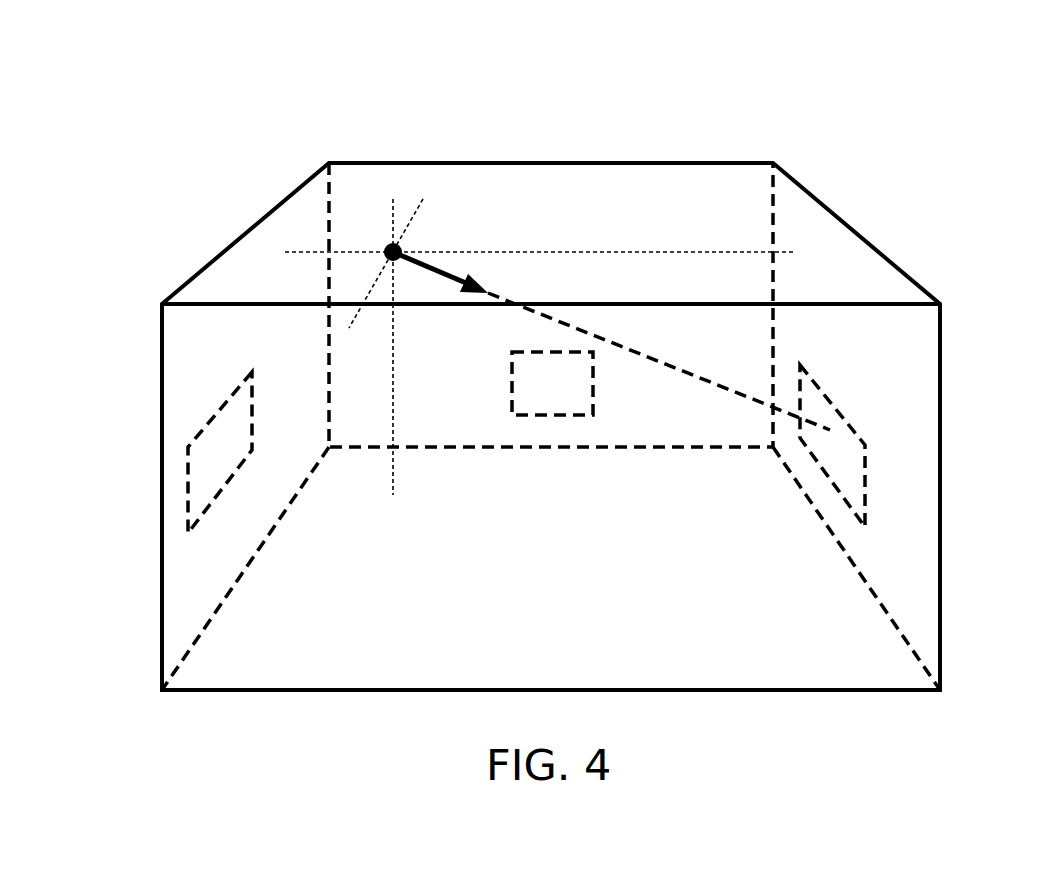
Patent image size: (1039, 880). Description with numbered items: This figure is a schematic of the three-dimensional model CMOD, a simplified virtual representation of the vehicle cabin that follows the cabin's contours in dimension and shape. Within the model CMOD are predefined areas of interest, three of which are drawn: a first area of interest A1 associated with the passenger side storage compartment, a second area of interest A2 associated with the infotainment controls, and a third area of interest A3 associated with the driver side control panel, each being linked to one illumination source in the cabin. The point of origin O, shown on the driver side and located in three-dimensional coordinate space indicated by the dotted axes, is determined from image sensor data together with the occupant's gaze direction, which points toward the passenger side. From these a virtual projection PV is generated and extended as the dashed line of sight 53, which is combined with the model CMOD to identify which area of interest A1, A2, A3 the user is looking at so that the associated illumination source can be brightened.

The three-dimensional model CMOD is at (719, 132).
The point of origin O is at (388, 243).
The virtual projection PV is at (436, 264).
The line of sight 53 is at (787, 413).
The first area of interest A1 is at (860, 438).
The second area of interest A2 is at (553, 416).
The third area of interest A3 is at (190, 462).